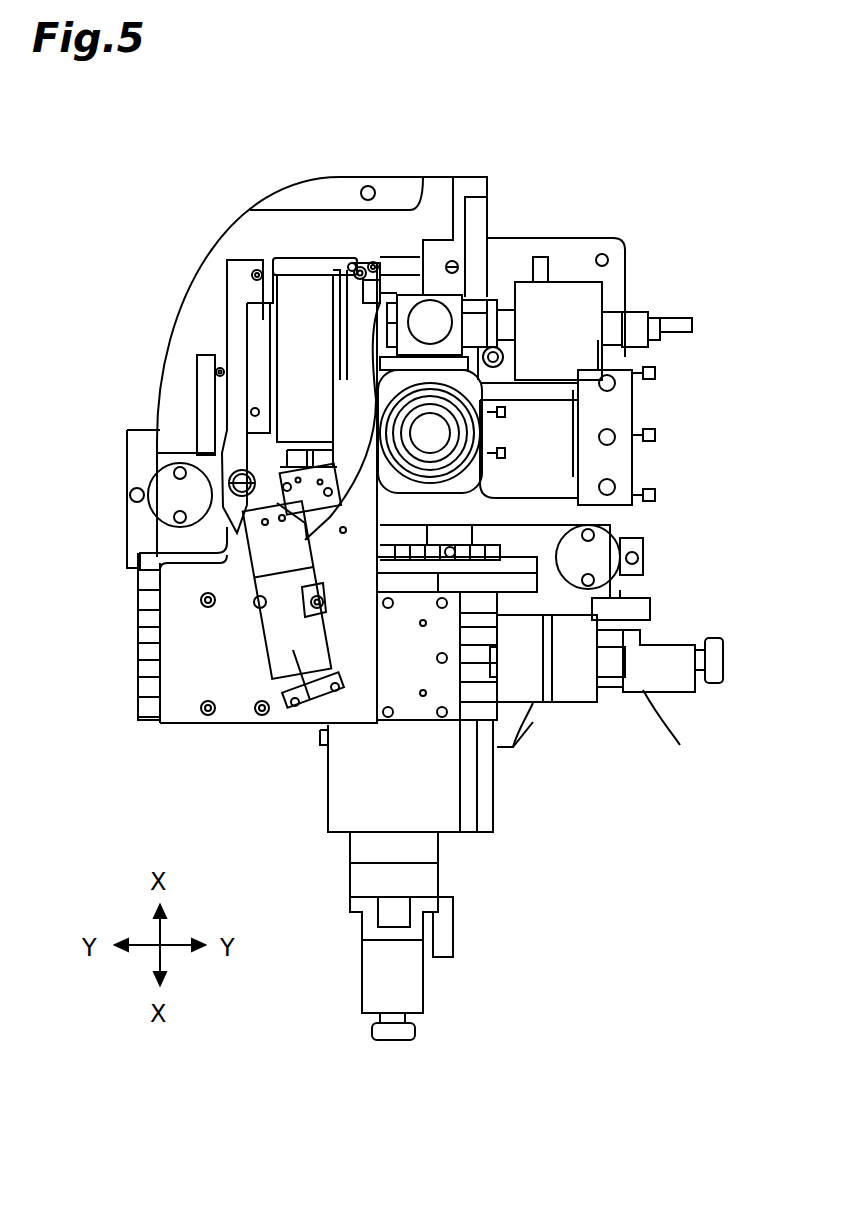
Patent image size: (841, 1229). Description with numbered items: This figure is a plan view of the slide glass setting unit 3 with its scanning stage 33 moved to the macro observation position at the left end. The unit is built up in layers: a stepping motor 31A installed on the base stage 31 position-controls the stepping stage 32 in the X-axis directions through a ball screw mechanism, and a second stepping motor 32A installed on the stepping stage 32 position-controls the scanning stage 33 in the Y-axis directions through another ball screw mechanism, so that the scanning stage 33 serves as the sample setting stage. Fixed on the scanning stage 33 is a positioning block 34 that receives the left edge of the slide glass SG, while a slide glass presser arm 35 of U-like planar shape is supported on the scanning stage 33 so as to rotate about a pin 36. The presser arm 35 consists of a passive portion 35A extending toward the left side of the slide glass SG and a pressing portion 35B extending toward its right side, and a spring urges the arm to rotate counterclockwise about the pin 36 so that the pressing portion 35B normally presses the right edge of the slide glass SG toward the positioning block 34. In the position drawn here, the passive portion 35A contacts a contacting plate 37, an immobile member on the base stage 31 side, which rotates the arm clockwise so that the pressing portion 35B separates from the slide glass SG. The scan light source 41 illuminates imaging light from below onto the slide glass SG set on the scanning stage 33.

The slide glass setting unit 3 is at (193, 243).
The base stage 31 is at (340, 178).
The stepping motor 31A is at (425, 985).
The stepping stage 32 is at (407, 722).
The stepping motor 32A is at (650, 690).
The scanning stage 33 is at (233, 727).
The positioning block 34 is at (257, 340).
The slide glass presser arm 35 is at (248, 548).
The passive portion 35A is at (227, 400).
The pressing portion 35B is at (373, 262).
The pin 36 is at (230, 472).
The contacting plate 37 is at (207, 370).
The scan light source 41 is at (430, 425).
The slide glass SG is at (298, 292).